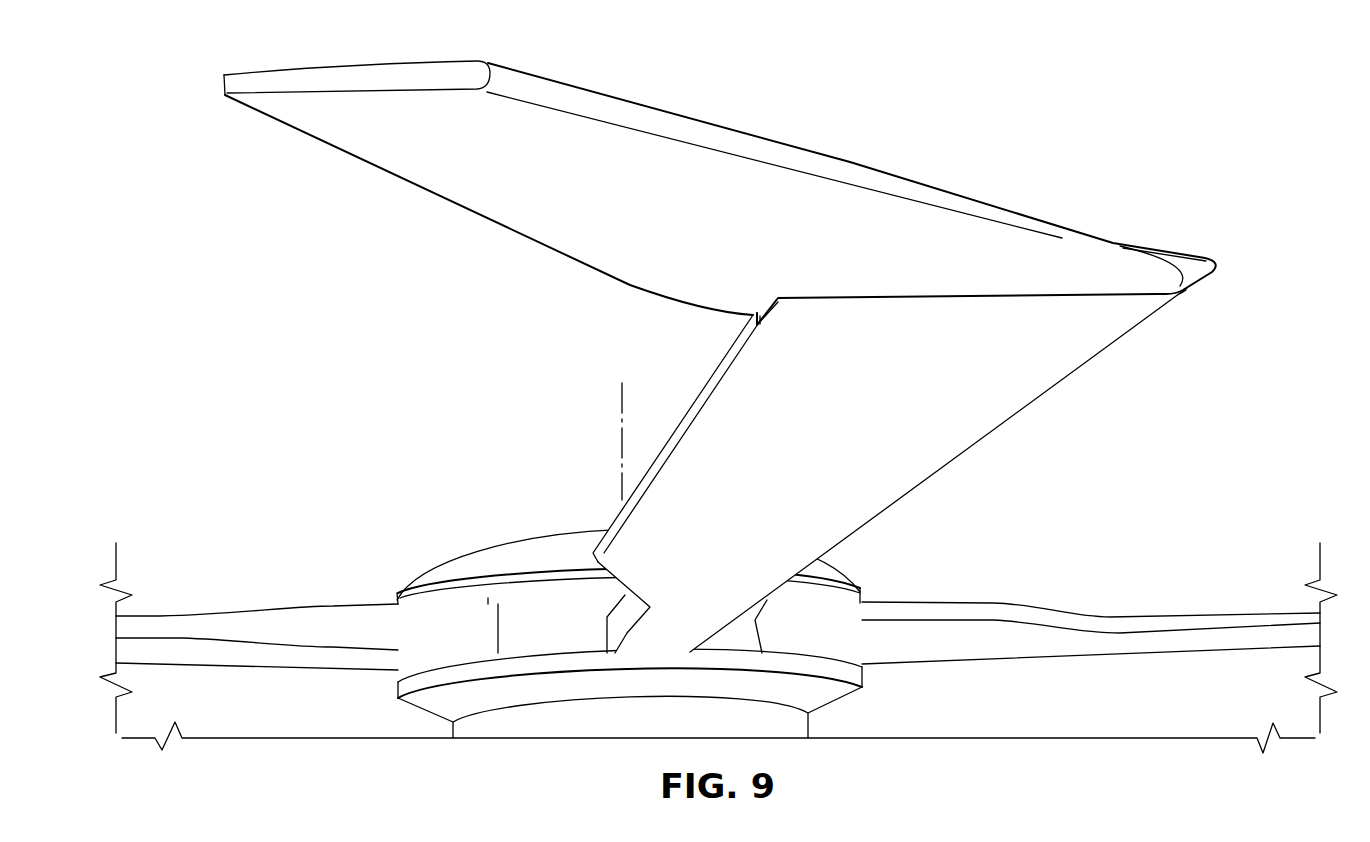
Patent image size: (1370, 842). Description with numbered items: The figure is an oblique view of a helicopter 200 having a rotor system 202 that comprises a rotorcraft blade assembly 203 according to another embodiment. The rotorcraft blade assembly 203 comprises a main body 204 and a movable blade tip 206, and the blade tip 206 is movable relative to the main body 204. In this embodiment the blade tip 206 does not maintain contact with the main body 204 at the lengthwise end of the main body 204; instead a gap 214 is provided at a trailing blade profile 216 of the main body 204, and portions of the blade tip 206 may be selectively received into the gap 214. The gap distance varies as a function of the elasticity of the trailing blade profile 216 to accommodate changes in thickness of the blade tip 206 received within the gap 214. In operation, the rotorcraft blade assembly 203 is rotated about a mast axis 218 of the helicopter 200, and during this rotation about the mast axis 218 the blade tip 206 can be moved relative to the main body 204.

The helicopter 200 is at (1070, 88).
The rotor system 202 is at (492, 545).
The rotorcraft blade assembly 203 is at (215, 612).
The main body 204 is at (930, 447).
The blade tip 206 is at (828, 158).
The gap 214 is at (759, 312).
The trailing blade profile 216 is at (713, 346).
The mast axis 218 is at (620, 400).